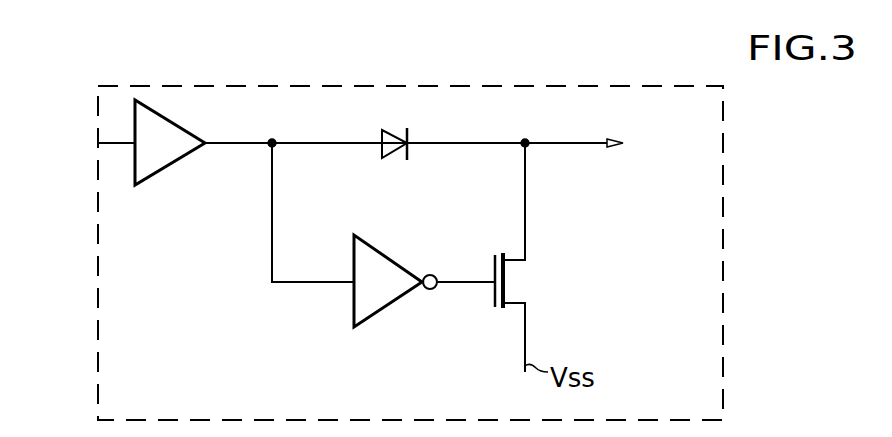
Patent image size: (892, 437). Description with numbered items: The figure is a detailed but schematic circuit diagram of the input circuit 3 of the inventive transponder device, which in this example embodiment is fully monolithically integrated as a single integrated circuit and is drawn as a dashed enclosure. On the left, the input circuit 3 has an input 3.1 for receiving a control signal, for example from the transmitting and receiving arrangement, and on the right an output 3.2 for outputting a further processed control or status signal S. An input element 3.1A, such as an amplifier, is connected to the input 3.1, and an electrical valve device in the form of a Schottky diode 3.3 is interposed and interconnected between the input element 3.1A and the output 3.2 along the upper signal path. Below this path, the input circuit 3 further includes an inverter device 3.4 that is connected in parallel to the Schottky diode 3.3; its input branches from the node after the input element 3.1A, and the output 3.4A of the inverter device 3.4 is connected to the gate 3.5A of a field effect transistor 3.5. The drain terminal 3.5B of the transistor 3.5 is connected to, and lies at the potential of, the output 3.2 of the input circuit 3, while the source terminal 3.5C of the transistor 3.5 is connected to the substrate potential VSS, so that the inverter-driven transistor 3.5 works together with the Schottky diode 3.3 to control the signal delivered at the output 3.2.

The input circuit 3 is at (568, 86).
The input 3.1 is at (98, 143).
The input element 3.1A is at (178, 120).
The output 3.2 is at (602, 140).
The Schottky diode 3.3 is at (397, 128).
The inverter device 3.4 is at (385, 313).
The output of the inverter device 3.4A is at (438, 274).
The field effect transistor 3.5 is at (558, 268).
The gate 3.5A is at (492, 287).
The drain terminal 3.5B is at (528, 255).
The source terminal 3.5C is at (530, 305).